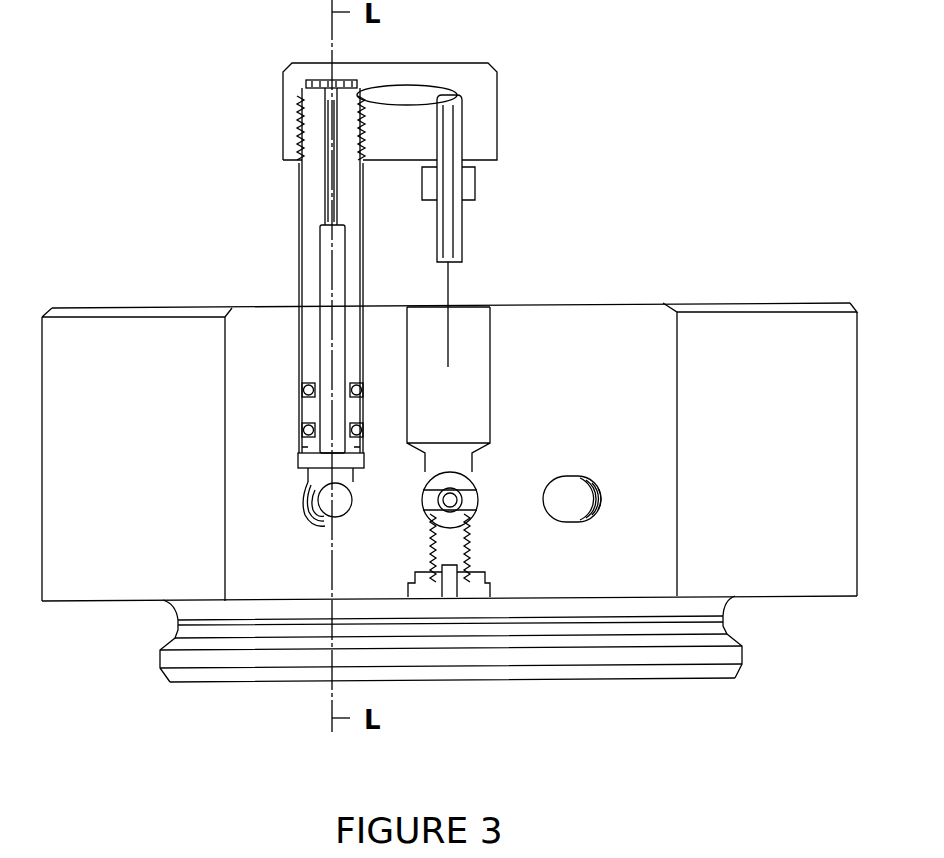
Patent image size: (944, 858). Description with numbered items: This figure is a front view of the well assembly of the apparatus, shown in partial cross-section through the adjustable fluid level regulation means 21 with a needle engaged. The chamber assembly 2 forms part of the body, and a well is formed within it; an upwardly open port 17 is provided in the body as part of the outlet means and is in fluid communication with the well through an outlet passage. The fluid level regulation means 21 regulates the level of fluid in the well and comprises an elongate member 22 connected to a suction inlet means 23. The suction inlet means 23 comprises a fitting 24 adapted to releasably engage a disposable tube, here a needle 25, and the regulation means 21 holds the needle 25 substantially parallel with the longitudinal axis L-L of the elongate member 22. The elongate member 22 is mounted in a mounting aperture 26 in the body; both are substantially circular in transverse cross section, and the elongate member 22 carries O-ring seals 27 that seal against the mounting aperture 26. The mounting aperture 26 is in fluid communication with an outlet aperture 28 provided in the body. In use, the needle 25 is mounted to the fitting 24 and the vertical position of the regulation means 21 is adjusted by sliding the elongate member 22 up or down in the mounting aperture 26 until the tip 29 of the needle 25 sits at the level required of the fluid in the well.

The chamber assembly 2 is at (637, 300).
The upwardly open port 17 is at (472, 363).
The adjustable fluid level regulation means 21 is at (497, 97).
The elongate member 22 is at (299, 207).
The suction inlet means 23 is at (464, 234).
The fitting 24 is at (476, 188).
The needle 25 is at (452, 286).
The mounting aperture 26 is at (302, 318).
The O-ring seals 27 is at (302, 383).
The outlet aperture 28 is at (342, 502).
The tip 29 is at (448, 366).